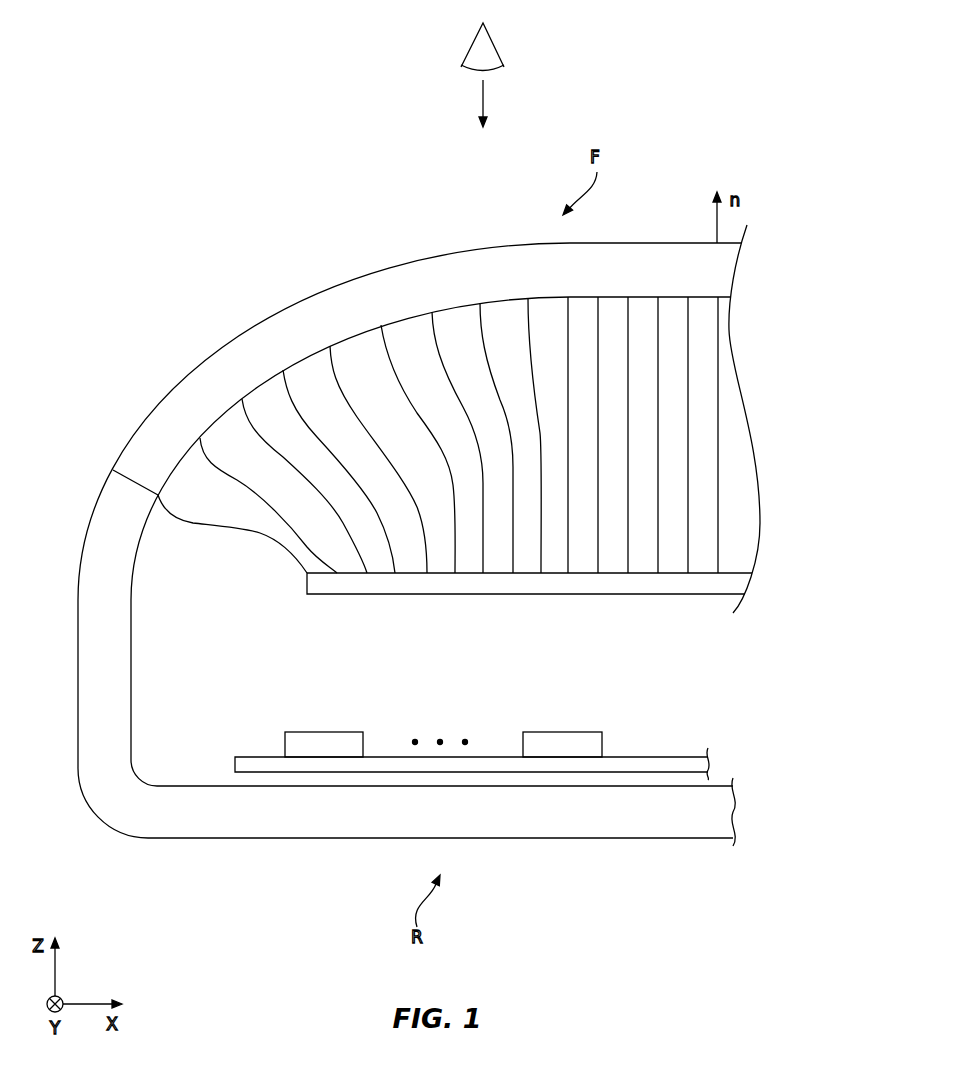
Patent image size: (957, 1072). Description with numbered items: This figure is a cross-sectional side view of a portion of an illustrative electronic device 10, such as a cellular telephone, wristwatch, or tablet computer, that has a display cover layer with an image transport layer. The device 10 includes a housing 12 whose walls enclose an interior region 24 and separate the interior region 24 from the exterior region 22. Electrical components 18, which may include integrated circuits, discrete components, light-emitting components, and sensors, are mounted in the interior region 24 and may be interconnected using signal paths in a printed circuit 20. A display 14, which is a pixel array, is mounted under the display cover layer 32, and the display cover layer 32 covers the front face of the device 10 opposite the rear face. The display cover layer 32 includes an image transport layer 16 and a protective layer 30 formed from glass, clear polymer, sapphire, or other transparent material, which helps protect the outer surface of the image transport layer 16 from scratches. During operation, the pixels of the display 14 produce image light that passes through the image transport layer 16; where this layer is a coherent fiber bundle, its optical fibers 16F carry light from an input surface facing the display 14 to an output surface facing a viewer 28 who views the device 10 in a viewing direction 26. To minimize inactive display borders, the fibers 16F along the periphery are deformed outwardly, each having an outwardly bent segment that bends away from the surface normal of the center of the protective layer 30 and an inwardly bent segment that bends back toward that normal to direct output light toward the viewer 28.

The electronic device 10 is at (680, 144).
The housing 12 is at (568, 825).
The display 14 is at (700, 580).
The image transport layer 16 is at (786, 297).
The optical fibers 16F is at (280, 480).
The electrical components 18 is at (324, 743).
The printed circuit 20 is at (257, 757).
The exterior region 22 is at (212, 229).
The interior region 24 is at (184, 765).
The viewing direction 26 is at (487, 100).
The viewer 28 is at (497, 42).
The protective layer 30 is at (343, 296).
The display cover layer 32 is at (850, 240).